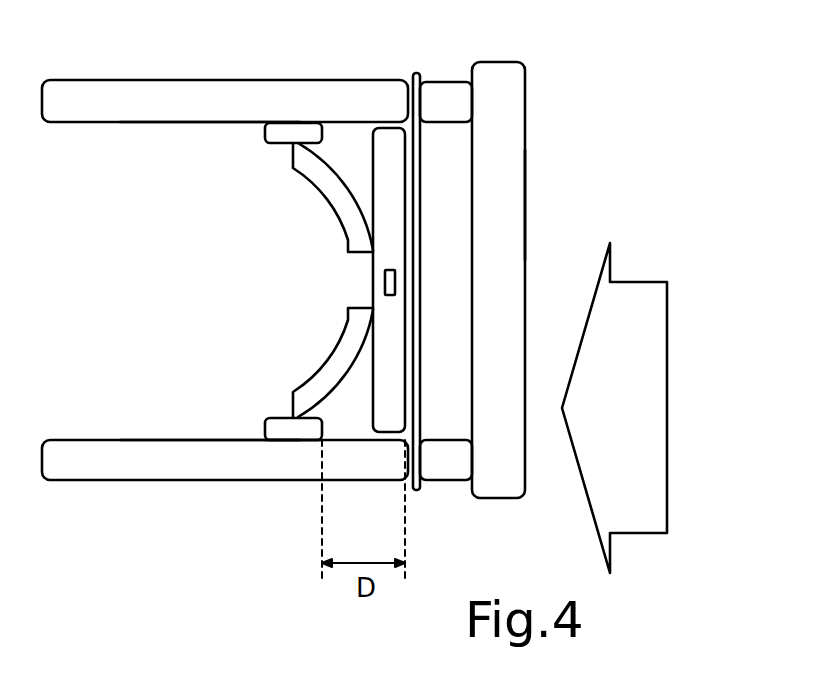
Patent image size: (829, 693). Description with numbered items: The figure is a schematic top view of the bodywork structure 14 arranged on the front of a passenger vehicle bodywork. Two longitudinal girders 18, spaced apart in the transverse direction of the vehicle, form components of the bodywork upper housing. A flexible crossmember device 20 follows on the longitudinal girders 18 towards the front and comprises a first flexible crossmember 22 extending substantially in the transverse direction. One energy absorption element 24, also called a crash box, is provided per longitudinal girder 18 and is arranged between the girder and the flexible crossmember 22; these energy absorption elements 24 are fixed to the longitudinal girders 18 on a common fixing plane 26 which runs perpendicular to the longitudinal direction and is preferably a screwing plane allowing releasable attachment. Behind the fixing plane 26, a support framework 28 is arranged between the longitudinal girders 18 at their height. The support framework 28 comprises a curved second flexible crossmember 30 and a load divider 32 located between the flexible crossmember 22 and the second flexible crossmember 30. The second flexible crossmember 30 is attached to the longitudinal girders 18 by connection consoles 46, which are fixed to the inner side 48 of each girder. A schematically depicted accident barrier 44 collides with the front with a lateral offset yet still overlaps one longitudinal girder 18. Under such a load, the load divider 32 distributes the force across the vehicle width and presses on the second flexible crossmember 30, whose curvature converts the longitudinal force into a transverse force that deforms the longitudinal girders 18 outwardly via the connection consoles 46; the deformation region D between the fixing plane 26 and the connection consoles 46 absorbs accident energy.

The bodywork structure 14 is at (565, 72).
The longitudinal girders 18 is at (198, 90).
The flexible crossmember device 20 is at (527, 173).
The flexible crossmember 22 is at (508, 207).
The energy absorption element 24 is at (447, 90).
The fixing plane 26 is at (413, 268).
The support framework 28 is at (292, 443).
The second flexible crossmember 30 is at (337, 165).
The load divider 32 is at (373, 262).
The accident barrier 44 is at (645, 400).
The connection consoles 46 is at (280, 135).
The inner side 48 is at (198, 124).